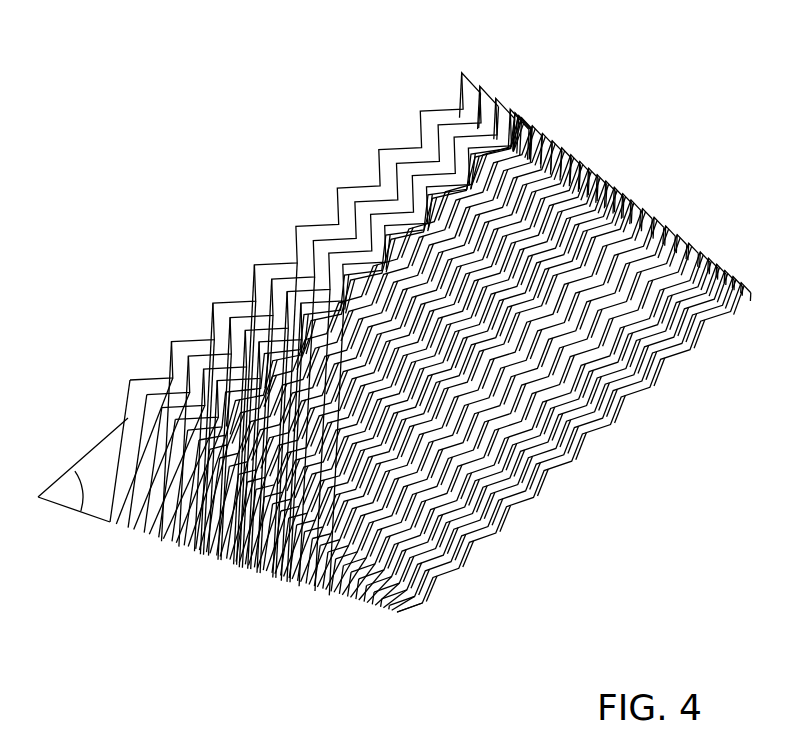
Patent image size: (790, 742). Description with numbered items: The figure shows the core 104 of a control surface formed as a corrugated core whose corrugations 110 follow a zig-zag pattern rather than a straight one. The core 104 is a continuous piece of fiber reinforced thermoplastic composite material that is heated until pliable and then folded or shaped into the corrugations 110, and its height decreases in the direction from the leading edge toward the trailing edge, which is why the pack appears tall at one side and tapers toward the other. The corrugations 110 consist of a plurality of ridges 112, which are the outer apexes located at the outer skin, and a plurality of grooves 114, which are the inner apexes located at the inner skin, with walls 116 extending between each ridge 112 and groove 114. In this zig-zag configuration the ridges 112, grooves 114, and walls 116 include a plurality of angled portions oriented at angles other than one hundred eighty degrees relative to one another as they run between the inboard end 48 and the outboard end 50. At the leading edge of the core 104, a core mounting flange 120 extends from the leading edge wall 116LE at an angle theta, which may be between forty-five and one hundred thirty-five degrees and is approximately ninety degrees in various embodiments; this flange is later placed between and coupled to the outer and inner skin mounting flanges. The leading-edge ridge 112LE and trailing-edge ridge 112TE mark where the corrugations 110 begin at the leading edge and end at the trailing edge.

The core 104 is at (166, 131).
The corrugations 110 is at (640, 180).
The ridges 112 is at (553, 137).
The grooves 114 is at (110, 524).
The walls 116 is at (205, 365).
The leading edge pleat peak 112LE is at (222, 300).
The leading edge wall 116LE is at (126, 420).
The trailing edge pleat peak 112TE is at (425, 577).
The core mounting flange 120 is at (62, 490).
The inboard end 48 is at (672, 228).
The outboard end 50 is at (343, 601).